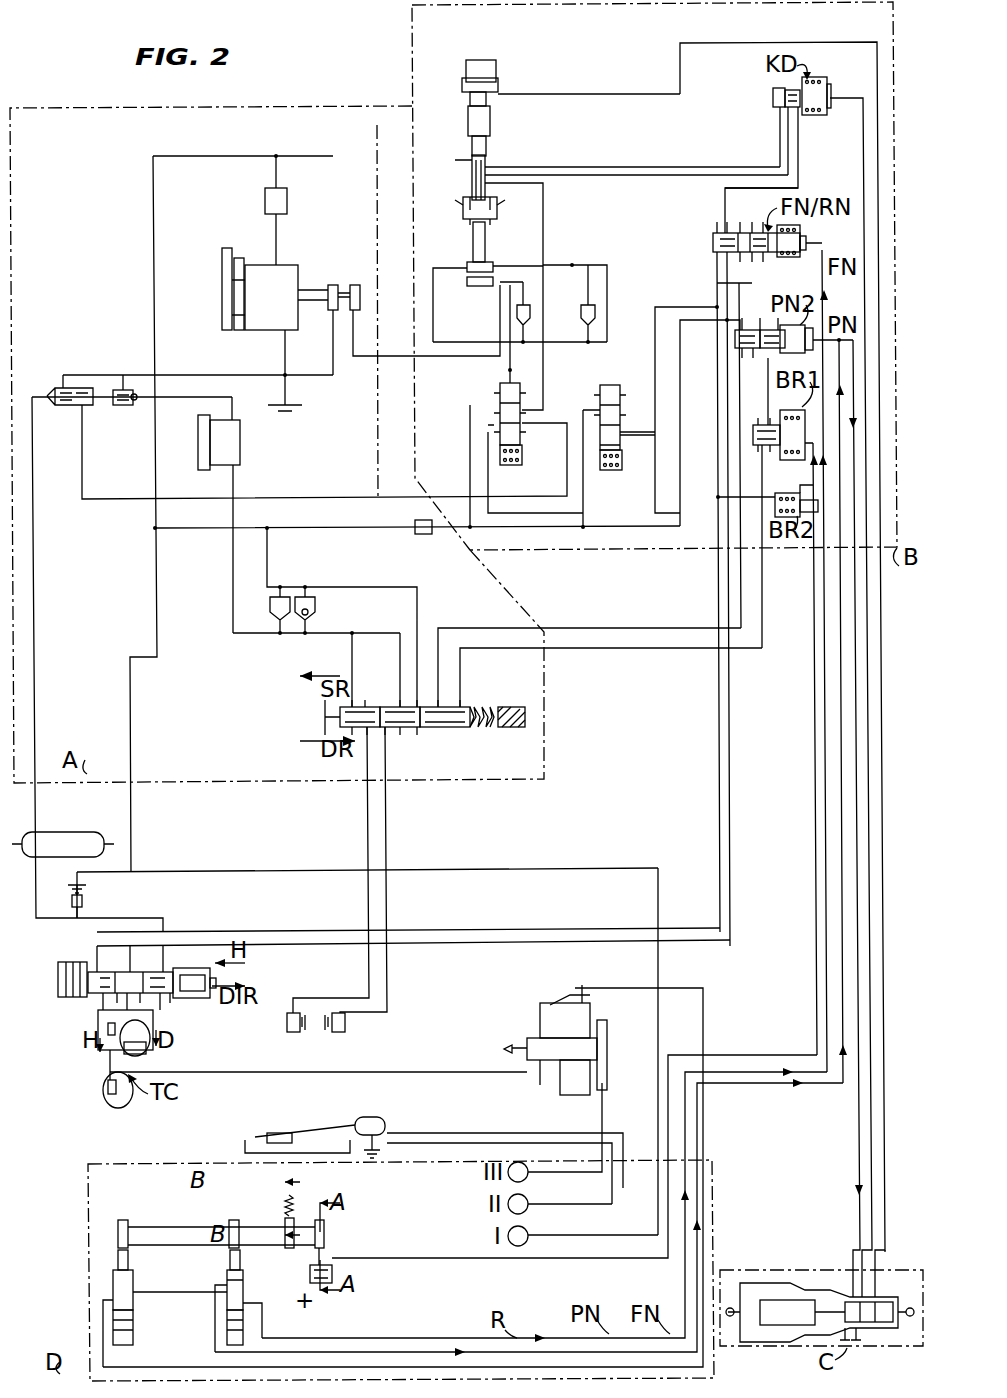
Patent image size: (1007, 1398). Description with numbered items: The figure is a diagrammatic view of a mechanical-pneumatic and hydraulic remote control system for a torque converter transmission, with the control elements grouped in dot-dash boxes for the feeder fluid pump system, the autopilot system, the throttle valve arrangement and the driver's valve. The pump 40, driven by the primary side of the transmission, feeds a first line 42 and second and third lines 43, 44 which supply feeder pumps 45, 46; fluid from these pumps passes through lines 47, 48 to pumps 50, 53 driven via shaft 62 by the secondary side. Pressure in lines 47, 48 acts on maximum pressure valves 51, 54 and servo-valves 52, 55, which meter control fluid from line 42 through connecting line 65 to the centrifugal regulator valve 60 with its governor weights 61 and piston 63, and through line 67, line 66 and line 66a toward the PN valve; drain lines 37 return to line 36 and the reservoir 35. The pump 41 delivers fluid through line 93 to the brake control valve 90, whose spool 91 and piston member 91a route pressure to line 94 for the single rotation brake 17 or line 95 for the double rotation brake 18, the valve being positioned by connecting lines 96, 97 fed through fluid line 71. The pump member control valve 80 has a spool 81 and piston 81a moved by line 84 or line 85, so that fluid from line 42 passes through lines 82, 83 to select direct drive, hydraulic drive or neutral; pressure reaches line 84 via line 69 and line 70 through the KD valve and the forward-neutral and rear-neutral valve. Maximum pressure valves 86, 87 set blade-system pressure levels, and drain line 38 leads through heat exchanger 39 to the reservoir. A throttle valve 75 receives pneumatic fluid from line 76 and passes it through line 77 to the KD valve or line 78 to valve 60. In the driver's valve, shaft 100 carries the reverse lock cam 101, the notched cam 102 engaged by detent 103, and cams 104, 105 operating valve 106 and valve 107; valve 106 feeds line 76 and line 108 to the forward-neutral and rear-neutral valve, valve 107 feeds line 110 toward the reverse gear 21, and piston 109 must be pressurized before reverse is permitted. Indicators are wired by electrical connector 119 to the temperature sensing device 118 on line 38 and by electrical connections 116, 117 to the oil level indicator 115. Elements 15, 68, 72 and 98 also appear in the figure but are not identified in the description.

The transmission 15 is at (400, 1072).
The single rotation brake 17 is at (290, 1032).
The double rotation brake 18 is at (339, 1032).
The gear 21 is at (530, 1058).
The reservoir 35 is at (286, 405).
The line 36 is at (123, 375).
The drain lines 37 is at (82, 470).
The drain line 38 is at (35, 520).
The heat exchanger 39 is at (82, 832).
The pump 40 is at (287, 310).
The pump 41 is at (240, 442).
The first line 42 is at (155, 274).
The second line 43 is at (376, 160).
The third line 44 is at (330, 200).
The feeder pump 45 is at (362, 291).
The feeder pump 46 is at (333, 312).
The line 47 is at (406, 356).
The line 48 is at (352, 376).
The pump 50 is at (478, 286).
The maximum pressure valve 51 is at (532, 302).
The servo-valve 52 is at (500, 385).
The pump 53 is at (482, 262).
The maximum pressure valve 54 is at (596, 302).
The servo-valve 55 is at (606, 385).
The centrifugal regulator valve 60 is at (466, 128).
The governor weights 61 is at (463, 207).
The shaft 62 is at (473, 240).
The piston 63 is at (462, 88).
The connecting line 65 is at (543, 202).
The line 66 is at (680, 500).
The line 66a is at (522, 432).
The line 67 is at (655, 332).
The signal line 68 is at (626, 167).
The line 69 is at (644, 175).
The line 70 is at (725, 188).
The fluid line 71 is at (768, 394).
The brake line 72 is at (804, 490).
The throttle valve 75 is at (828, 1288).
The line 76 is at (215, 1352).
The first fluid line 77 is at (871, 1126).
The line 78 is at (885, 1164).
The pump member control valve 80 is at (110, 992).
The spool 81 is at (94, 993).
The piston 81a is at (62, 998).
The line 82 is at (105, 1050).
The line 83 is at (148, 1042).
The line 84 is at (306, 932).
The line 85 is at (324, 945).
The maximum pressure valve 86 is at (55, 388).
The maximum pressure valve 87 is at (134, 402).
The brake control valve 90 is at (392, 737).
The spool 91 is at (432, 727).
The piston member 91a is at (477, 727).
The line 93 is at (233, 633).
The line 94 is at (367, 835).
The line 95 is at (386, 835).
The connecting line 96 is at (470, 628).
The connecting line 97 is at (588, 648).
The line 98 is at (764, 640).
The shaft 100 is at (177, 1224).
The reverse lock cam 101 is at (323, 1235).
The cam 102 is at (285, 1220).
The detent 103 is at (289, 1195).
The cam 104 is at (230, 1222).
The cam 105 is at (118, 1228).
The valve 106 is at (228, 1262).
The valve 107 is at (111, 1262).
The line 108 is at (262, 1338).
The piston 109 is at (310, 1272).
The line 110 is at (704, 998).
The oil level indicator 115 is at (368, 1118).
The electrical connection 116 is at (484, 1122).
The electrical connection 117 is at (492, 1143).
The temperature sensing device 118 is at (72, 908).
The electrical connector 119 is at (292, 870).